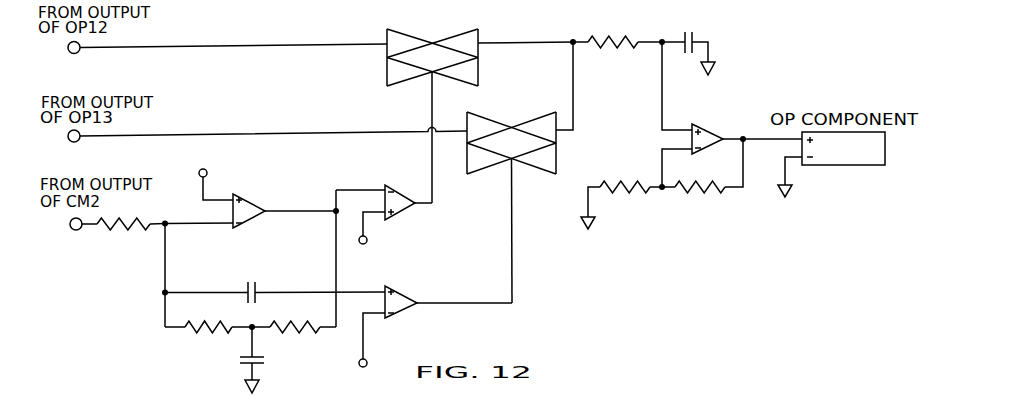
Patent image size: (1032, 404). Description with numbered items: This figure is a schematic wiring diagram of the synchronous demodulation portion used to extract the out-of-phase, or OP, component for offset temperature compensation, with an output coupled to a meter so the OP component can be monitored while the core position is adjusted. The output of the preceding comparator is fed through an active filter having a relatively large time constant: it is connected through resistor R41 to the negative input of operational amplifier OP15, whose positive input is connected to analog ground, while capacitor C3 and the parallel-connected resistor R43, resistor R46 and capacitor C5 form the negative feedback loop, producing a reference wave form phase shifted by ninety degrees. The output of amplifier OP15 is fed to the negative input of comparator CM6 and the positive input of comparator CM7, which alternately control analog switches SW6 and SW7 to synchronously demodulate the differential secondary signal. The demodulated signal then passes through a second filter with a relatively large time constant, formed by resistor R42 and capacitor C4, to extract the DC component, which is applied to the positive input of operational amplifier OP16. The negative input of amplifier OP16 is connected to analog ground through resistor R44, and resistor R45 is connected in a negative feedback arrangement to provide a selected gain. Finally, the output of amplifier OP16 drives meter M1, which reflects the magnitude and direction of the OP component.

The resistor R41 is at (131, 235).
The resistor R42 is at (617, 30).
The resistor R43 is at (208, 339).
The resistor R44 is at (621, 192).
The resistor R45 is at (702, 179).
The resistor R46 is at (294, 340).
The capacitor C3 is at (275, 282).
The capacitor C4 is at (690, 46).
The capacitor C5 is at (238, 360).
The operational amplifier OP15 is at (255, 197).
The operational amplifier OP16 is at (740, 136).
The comparator CM6 is at (395, 208).
The comparator CM7 is at (423, 331).
The analog switch SW6 is at (431, 59).
The analog switch SW7 is at (512, 148).
The meter M1 is at (842, 165).